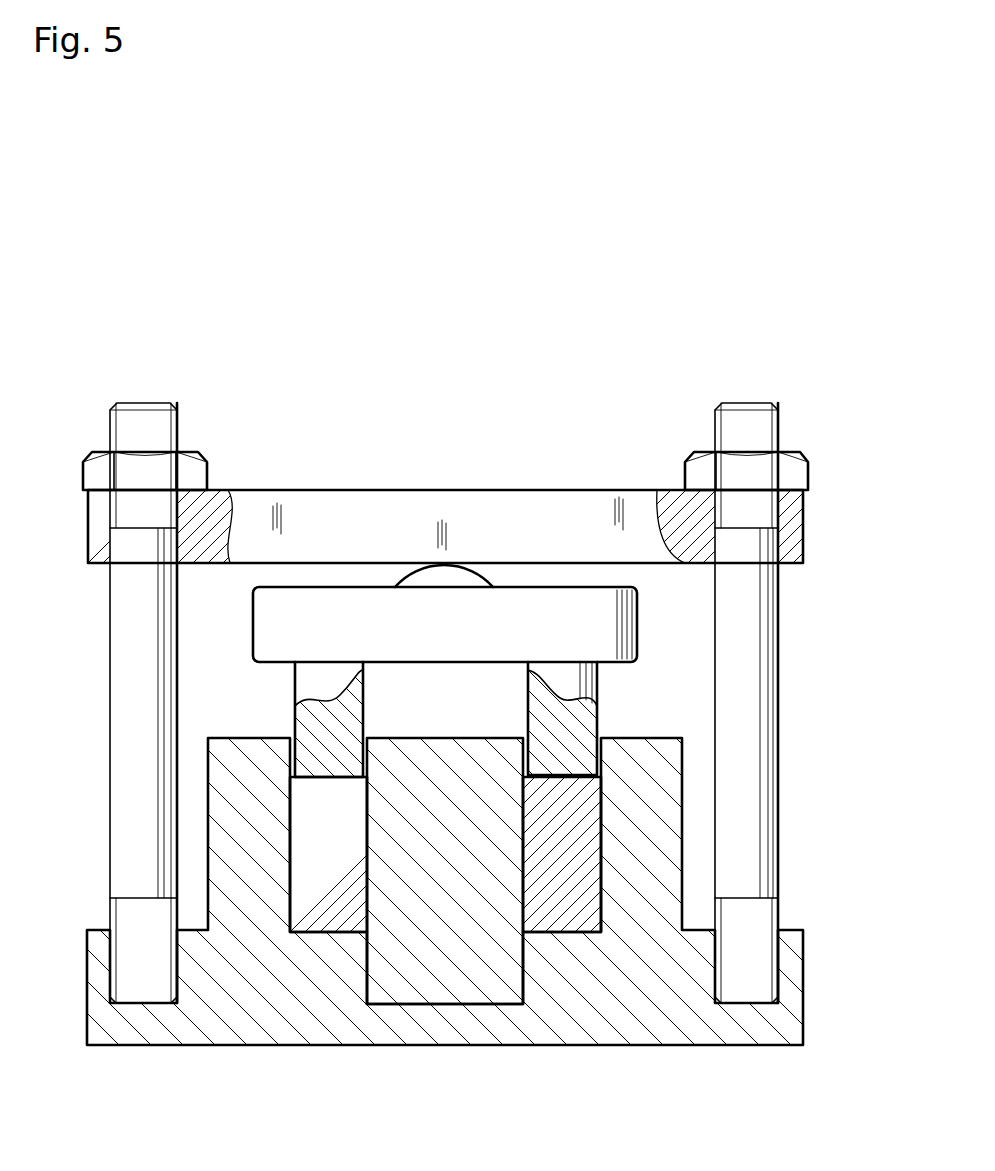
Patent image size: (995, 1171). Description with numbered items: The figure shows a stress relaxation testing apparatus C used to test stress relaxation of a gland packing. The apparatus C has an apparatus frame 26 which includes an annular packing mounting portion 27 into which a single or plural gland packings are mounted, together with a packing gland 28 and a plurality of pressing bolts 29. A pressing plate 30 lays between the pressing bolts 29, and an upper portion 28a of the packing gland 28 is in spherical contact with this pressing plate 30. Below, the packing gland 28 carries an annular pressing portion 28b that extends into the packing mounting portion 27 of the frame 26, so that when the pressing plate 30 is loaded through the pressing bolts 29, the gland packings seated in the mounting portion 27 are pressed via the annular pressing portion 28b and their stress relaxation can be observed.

The apparatus frame 26 is at (797, 935).
The packing mounting portion 27 is at (290, 877).
The packing gland 28 is at (640, 644).
The upper portion 28a is at (463, 580).
The annular pressing portion 28b is at (298, 683).
The pressing bolts 29 is at (127, 641).
The pressing plate 30 is at (345, 500).
The stress relaxation testing apparatus C is at (577, 343).